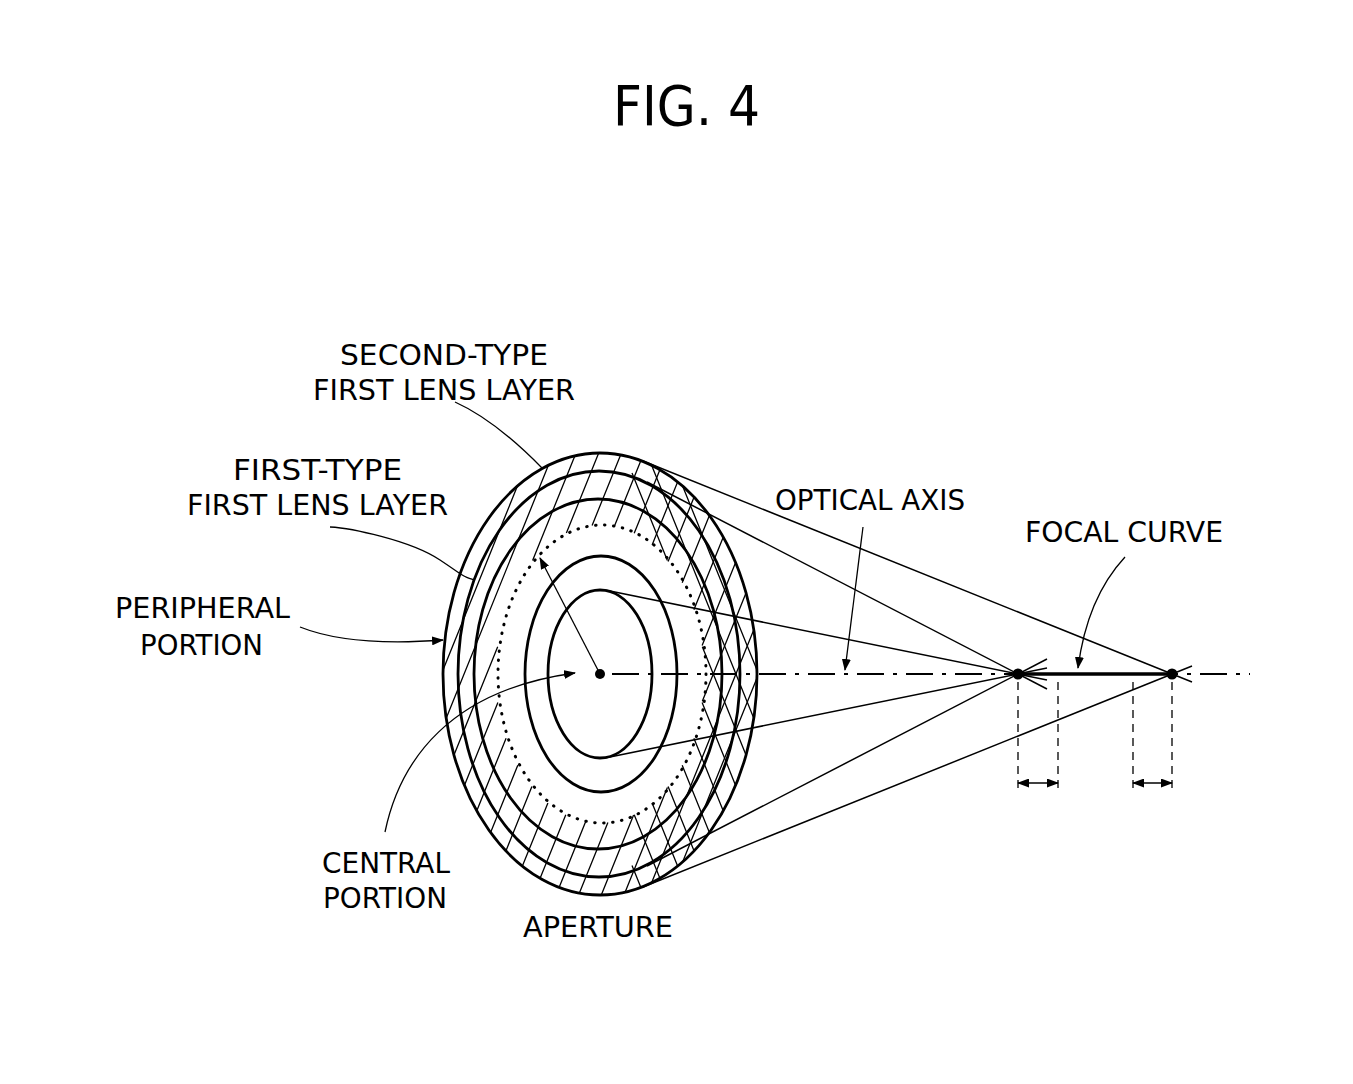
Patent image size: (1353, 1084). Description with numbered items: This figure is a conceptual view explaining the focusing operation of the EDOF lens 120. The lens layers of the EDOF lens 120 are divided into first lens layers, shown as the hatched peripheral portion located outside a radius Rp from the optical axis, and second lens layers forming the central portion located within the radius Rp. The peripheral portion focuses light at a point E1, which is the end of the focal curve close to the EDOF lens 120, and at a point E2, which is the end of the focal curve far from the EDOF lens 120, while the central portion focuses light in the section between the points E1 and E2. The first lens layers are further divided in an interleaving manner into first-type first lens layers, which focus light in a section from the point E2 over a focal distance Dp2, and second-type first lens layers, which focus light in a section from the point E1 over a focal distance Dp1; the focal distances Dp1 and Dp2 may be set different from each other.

The EDOF lens 120 is at (657, 472).
The point E1 is at (1019, 655).
The point E2 is at (1172, 655).
The focal distance Dp1 is at (1036, 753).
The focal distance Dp2 is at (1150, 753).
The radius Rp is at (577, 616).